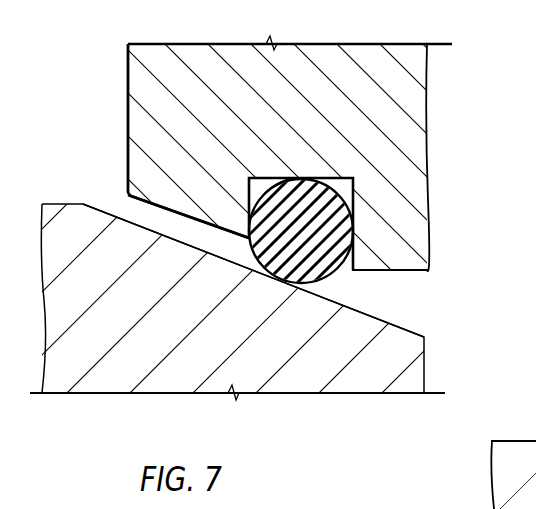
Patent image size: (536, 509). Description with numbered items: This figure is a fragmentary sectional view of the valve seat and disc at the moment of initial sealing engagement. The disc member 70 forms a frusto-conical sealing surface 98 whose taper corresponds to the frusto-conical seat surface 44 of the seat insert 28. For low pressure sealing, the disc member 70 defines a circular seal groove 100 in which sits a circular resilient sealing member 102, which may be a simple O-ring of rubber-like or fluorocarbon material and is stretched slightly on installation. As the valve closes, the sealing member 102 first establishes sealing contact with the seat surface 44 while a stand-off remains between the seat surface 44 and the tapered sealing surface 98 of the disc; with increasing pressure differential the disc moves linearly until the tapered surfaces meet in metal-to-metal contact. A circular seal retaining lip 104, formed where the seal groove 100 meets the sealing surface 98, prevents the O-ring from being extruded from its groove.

The disc member 70 is at (195, 82).
The frusto-conical sealing surface 98 is at (163, 212).
The circular seal groove 100 is at (340, 181).
The circular resilient sealing member 102 is at (320, 266).
The circular seal retaining lip 104 is at (238, 226).
The seat insert 28 is at (90, 362).
The frusto-conical seat surface 44 is at (215, 248).